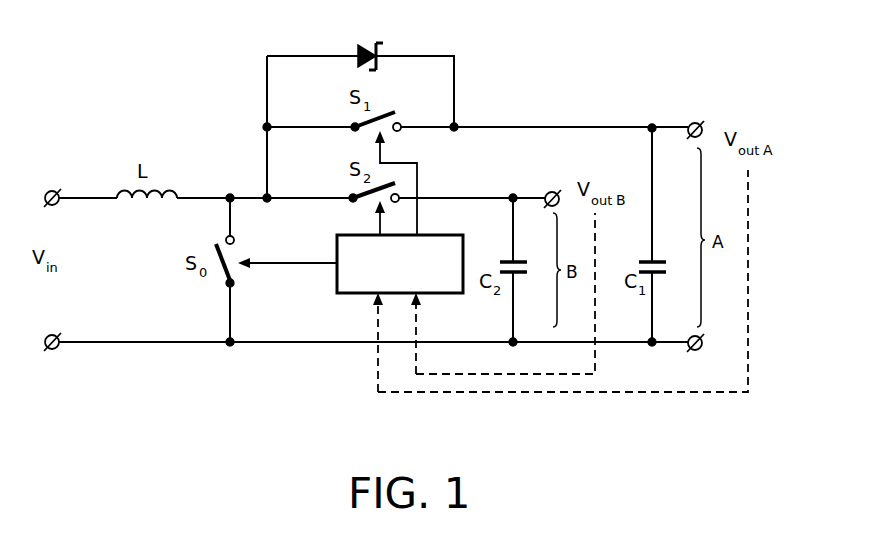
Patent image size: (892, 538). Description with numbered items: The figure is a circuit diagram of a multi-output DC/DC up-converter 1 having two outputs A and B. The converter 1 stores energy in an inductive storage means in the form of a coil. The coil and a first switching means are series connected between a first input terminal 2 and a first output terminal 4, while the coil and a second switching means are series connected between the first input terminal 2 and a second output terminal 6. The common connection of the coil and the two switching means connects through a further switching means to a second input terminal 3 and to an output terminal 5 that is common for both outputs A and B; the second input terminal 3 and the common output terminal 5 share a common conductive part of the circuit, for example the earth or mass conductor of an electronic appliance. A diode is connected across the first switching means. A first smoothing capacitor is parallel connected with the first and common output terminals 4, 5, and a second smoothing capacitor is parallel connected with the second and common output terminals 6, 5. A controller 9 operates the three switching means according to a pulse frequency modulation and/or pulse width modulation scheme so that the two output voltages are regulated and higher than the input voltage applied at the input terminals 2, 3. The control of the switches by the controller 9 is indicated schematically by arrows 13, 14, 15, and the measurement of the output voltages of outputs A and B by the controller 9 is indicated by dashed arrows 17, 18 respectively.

The multi-output DC/DC up-converter 1 is at (541, 57).
The first input terminal 2 is at (45, 197).
The second input terminal 3 is at (45, 341).
The first output terminal 4 is at (693, 122).
The common output terminal 5 is at (696, 351).
The second output terminal 6 is at (551, 191).
The controller 9 is at (338, 296).
The arrow 13 is at (280, 262).
The arrow 14 is at (407, 160).
The arrow 15 is at (377, 222).
The dashed arrow 17 is at (580, 394).
The dashed arrow 18 is at (463, 376).